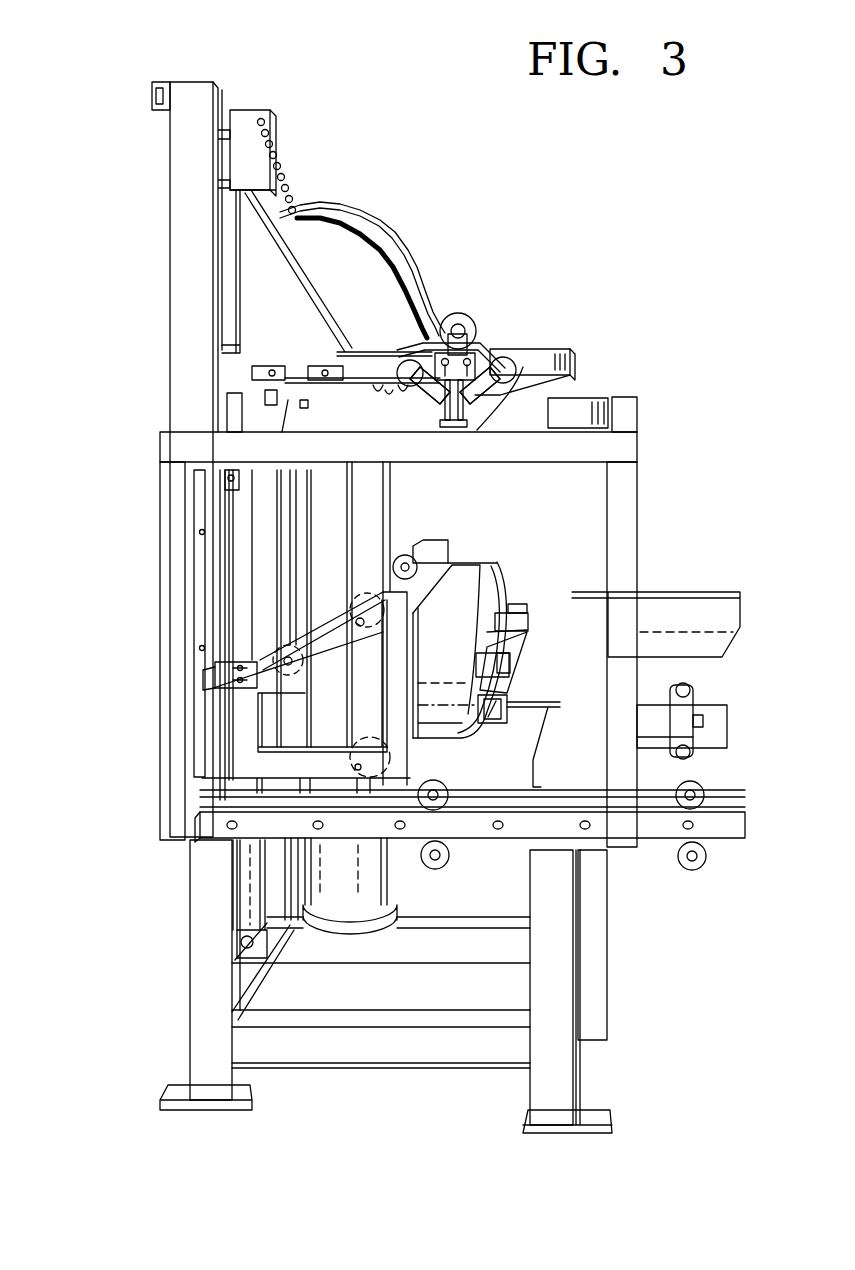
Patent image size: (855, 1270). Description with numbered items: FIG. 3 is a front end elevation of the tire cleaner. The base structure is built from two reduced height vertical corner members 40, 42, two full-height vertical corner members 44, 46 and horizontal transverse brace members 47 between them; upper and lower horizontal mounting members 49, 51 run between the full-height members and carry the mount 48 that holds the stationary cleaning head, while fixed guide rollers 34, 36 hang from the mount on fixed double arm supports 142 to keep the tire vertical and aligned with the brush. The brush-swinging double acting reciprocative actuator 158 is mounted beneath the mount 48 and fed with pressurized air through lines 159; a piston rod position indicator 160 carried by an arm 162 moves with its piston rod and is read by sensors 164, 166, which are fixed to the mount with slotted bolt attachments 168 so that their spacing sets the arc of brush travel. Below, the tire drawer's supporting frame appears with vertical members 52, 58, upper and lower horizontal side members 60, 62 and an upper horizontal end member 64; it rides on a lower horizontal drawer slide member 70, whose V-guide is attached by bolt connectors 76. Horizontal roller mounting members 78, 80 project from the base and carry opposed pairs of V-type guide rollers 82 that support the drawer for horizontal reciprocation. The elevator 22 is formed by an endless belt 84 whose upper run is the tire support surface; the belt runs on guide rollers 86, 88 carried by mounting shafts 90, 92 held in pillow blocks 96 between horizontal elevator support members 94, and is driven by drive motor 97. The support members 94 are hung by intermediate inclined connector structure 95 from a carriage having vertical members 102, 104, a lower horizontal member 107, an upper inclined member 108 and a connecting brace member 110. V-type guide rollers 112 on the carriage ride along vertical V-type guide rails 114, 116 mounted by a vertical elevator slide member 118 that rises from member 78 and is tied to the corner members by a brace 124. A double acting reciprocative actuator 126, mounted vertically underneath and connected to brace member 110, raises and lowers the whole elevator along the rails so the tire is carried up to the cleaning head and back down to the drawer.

The elevator 22 is at (483, 539).
The fixed guide roller 34 is at (488, 382).
The fixed guide roller 36 is at (414, 392).
The reduced height vertical corner member 40 is at (566, 1083).
The reduced height vertical corner member 42 is at (590, 985).
The full-height vertical corner member 44 is at (200, 980).
The full-height vertical corner member 46 is at (250, 116).
The horizontal transverse brace member 47 is at (224, 118).
The mount 48 is at (533, 358).
The upper horizontal mounting member 49 is at (223, 210).
The lower horizontal mounting member 51 is at (225, 367).
The vertical member 52 is at (628, 500).
The vertical member 58 is at (185, 680).
The upper horizontal side member 60 is at (632, 410).
The lower horizontal side member 62 is at (557, 716).
The upper horizontal end member 64 is at (577, 410).
The lower horizontal drawer slide member 70 is at (735, 832).
The bolt connector 76 is at (235, 830).
The horizontal roller mounting member 78 is at (675, 738).
The horizontal roller mounting member 80 is at (657, 792).
The V-type guide roller 82 is at (445, 782).
The endless belt 84 is at (451, 633).
The guide roller 86 is at (500, 570).
The guide roller 88 is at (472, 738).
The mounting shaft 90 is at (510, 613).
The mounting shaft 92 is at (485, 668).
The horizontal elevator support member 94 is at (512, 655).
The intermediate inclined connector structure 95 is at (295, 622).
The pillow block 96 is at (517, 605).
The drive motor 97 is at (337, 912).
The vertical member 102 is at (245, 730).
The vertical member 104 is at (446, 676).
The lower horizontal member 107 is at (287, 763).
The upper inclined member 108 is at (313, 628).
The connecting brace member 110 is at (257, 642).
The V-type guide roller 112 is at (365, 740).
The vertical V-type guide rail 114 is at (388, 512).
The vertical V-type guide rail 116 is at (354, 511).
The vertical elevator slide member 118 is at (410, 528).
The brace 124 is at (258, 478).
The double acting reciprocative actuator 126 is at (245, 875).
The fixed double arm support 142 is at (462, 368).
The double acting reciprocative actuator 158 is at (378, 395).
The lines 159 is at (350, 222).
The piston rod position indicator 160 is at (398, 431).
The arm 162 is at (421, 338).
The sensor 164 is at (262, 401).
The sensor 166 is at (318, 392).
The slotted bolt attachment 168 is at (272, 366).